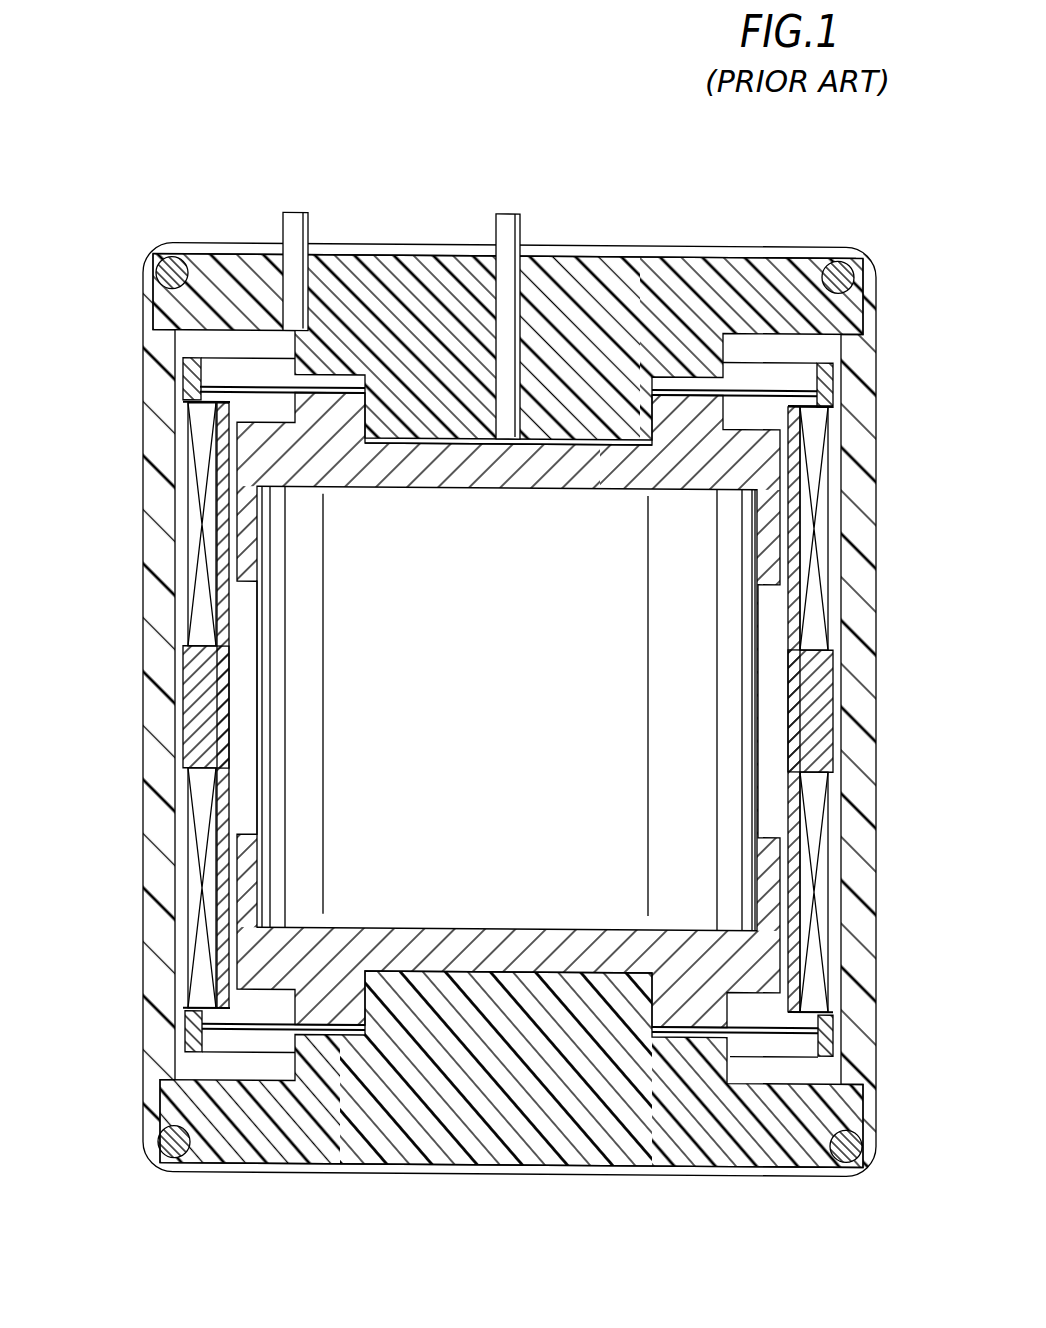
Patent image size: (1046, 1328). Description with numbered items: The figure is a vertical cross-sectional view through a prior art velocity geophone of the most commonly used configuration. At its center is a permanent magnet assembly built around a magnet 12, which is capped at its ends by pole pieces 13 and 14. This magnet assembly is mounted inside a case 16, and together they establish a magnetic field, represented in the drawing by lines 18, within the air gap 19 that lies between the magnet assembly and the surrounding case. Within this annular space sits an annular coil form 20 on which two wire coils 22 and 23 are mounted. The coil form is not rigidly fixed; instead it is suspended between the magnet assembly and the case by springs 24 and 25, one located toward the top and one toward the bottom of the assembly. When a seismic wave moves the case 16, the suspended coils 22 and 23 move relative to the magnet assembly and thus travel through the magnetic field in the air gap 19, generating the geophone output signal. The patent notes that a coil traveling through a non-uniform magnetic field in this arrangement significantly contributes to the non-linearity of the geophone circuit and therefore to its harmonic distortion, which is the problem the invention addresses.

The magnet 12 is at (512, 741).
The pole piece 13 is at (738, 452).
The pole piece 14 is at (690, 993).
The case 16 is at (860, 360).
The magnetic field lines 18 is at (805, 382).
The air gap 19 is at (775, 667).
The annular coil form 20 is at (813, 713).
The wire coil 22 is at (195, 498).
The wire coil 23 is at (195, 863).
The spring 24 is at (248, 389).
The spring 25 is at (262, 1031).